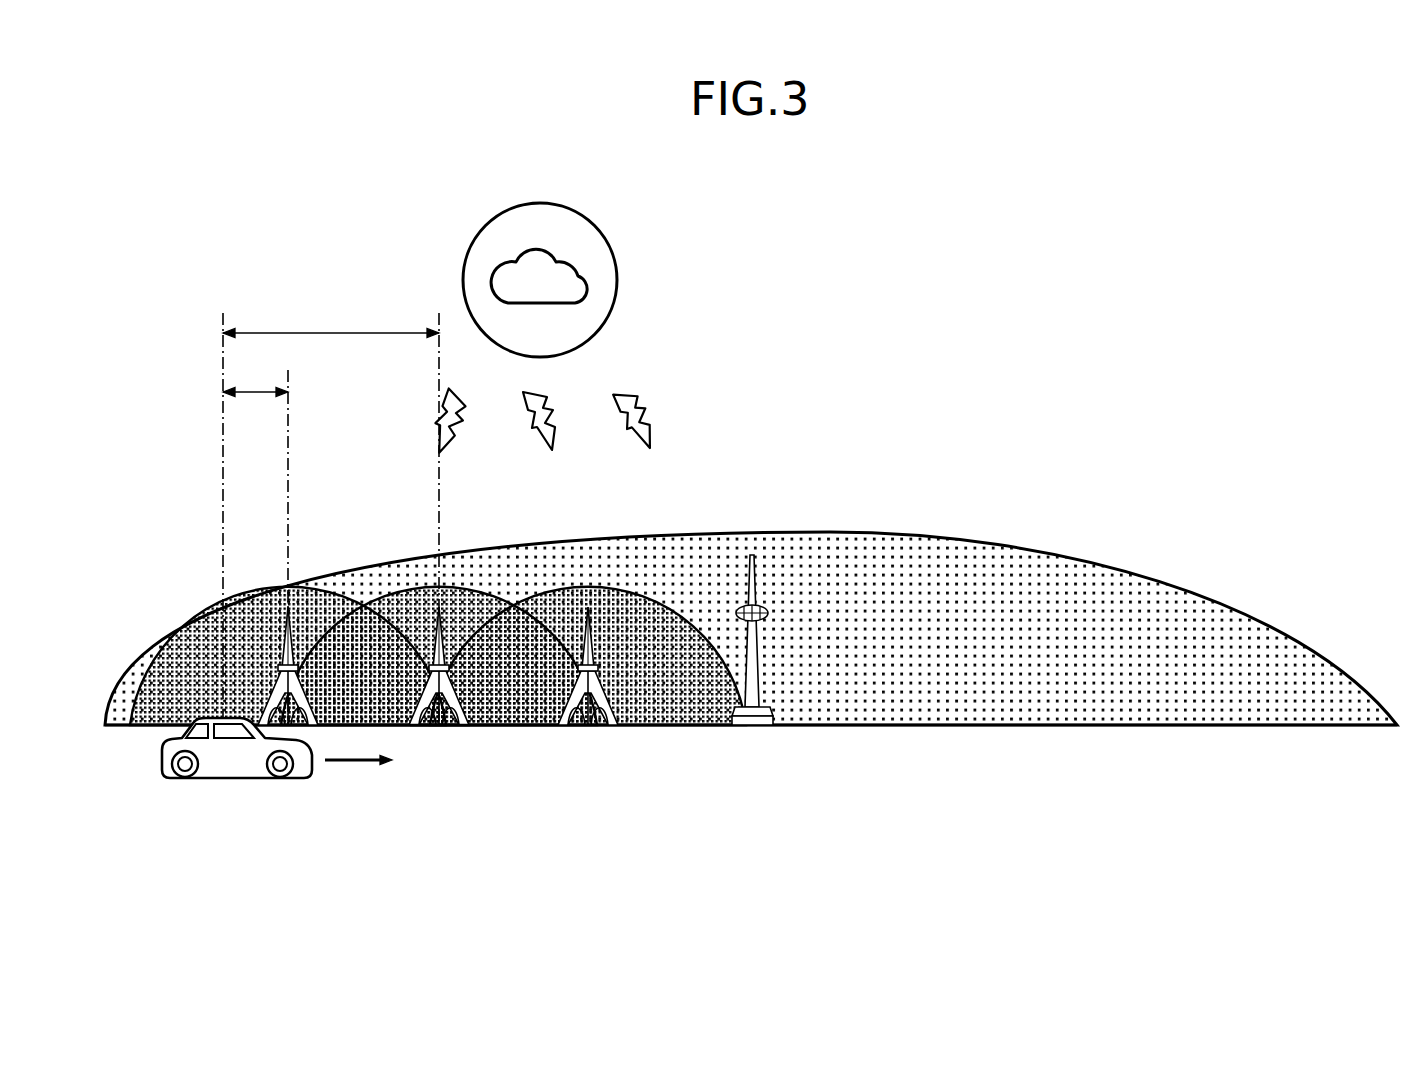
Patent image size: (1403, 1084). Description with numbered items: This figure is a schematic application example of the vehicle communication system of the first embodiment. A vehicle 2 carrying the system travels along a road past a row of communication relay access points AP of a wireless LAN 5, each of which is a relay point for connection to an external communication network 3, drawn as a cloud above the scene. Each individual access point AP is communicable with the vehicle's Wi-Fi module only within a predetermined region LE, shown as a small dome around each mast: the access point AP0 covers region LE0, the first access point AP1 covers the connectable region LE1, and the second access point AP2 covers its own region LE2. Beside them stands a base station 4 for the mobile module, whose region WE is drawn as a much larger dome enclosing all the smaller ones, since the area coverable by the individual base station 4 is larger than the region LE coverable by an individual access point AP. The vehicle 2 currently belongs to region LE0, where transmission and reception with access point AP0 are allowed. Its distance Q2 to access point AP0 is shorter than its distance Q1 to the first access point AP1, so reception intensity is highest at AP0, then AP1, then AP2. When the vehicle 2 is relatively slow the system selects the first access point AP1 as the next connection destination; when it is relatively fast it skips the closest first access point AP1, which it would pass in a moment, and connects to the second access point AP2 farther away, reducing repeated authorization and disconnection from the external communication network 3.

The vehicle 2 is at (162, 752).
The external communication network 3 is at (571, 208).
The base station 4 is at (758, 578).
The wireless LAN 5 is at (440, 733).
The access point AP is at (472, 593).
The access point AP0 is at (297, 622).
The first access point AP1 is at (441, 630).
The second access point AP2 is at (592, 625).
The region LE is at (433, 610).
The region LE0 is at (196, 606).
The connectable region LE1 is at (490, 592).
The local area LE2 is at (640, 587).
The region WE is at (860, 533).
The distance Q1 is at (331, 321).
The distance Q2 is at (255, 379).